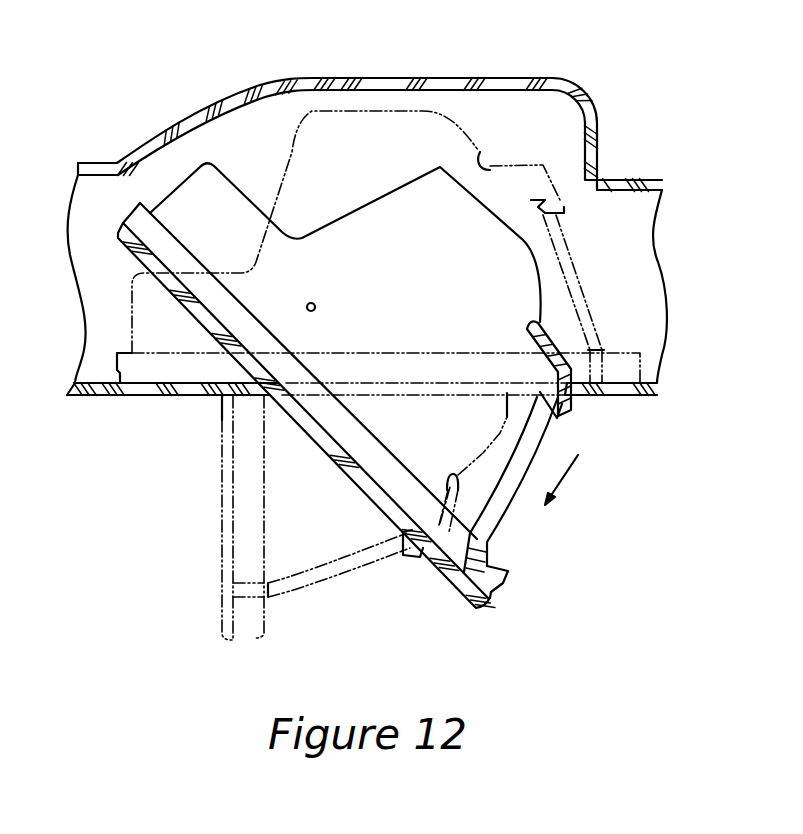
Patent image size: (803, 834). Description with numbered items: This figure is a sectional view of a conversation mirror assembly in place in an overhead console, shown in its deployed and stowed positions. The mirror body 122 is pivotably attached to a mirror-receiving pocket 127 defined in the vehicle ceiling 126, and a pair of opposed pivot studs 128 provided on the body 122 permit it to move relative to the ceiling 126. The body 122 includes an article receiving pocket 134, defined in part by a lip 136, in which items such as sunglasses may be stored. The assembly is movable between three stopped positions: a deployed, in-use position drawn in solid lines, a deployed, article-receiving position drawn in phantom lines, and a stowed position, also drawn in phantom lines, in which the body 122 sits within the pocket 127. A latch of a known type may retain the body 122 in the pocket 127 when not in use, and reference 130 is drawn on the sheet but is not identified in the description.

The body 122 is at (467, 220).
The vehicle ceiling 126 is at (135, 150).
The mirror-receiving pocket 127 is at (143, 370).
The pivot stud 128 is at (312, 303).
The latch arm 130 is at (530, 437).
The article receiving pocket 134 is at (480, 507).
The lip 136 is at (557, 360).